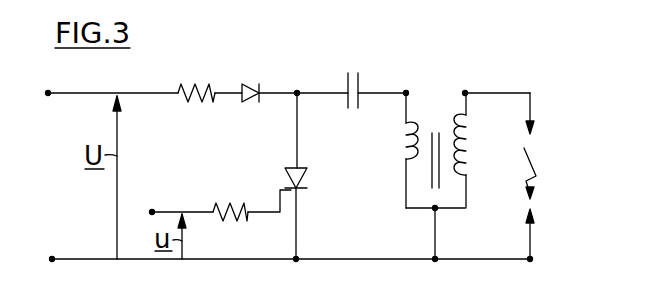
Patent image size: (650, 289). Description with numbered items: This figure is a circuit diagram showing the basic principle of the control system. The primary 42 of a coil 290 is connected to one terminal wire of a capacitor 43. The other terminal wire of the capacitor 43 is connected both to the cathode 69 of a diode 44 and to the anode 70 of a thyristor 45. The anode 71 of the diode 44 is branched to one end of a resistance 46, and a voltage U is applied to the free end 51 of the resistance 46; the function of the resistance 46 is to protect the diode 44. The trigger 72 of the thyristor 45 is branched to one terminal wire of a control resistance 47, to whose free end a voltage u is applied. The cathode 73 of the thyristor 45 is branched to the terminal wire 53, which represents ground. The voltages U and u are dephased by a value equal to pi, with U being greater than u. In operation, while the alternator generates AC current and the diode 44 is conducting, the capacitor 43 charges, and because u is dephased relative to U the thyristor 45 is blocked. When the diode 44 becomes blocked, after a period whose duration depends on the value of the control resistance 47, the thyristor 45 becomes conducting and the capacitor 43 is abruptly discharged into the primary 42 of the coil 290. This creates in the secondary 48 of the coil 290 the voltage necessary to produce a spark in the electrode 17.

The free end of resistance 51 is at (48, 93).
The terminal wire 53 is at (52, 259).
The resistance 46 is at (186, 80).
The diode 44 is at (246, 83).
The capacitor 43 is at (346, 84).
The anode of diode 71 is at (226, 96).
The cathode of diode 69 is at (267, 96).
The anode of thyristor 70 is at (300, 126).
The coil 290 is at (436, 114).
The primary of coil 42 is at (403, 148).
The secondary of coil 48 is at (468, 165).
The electrode 17 is at (533, 135).
The control resistance 47 is at (228, 201).
The trigger of thyristor 72 is at (272, 207).
The thyristor 45 is at (306, 172).
The cathode of thyristor 73 is at (298, 229).